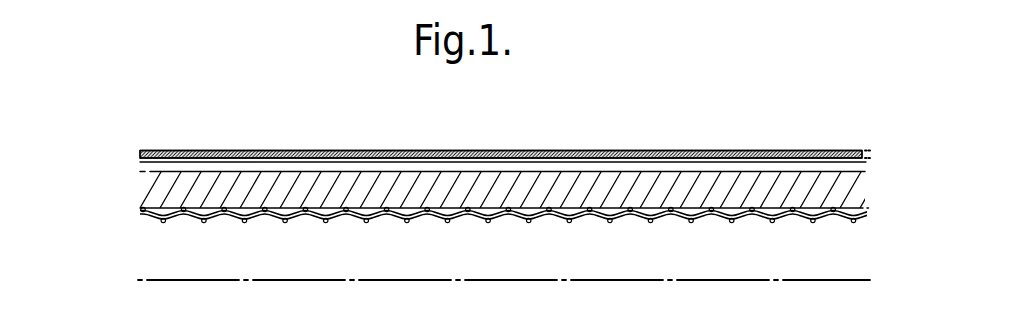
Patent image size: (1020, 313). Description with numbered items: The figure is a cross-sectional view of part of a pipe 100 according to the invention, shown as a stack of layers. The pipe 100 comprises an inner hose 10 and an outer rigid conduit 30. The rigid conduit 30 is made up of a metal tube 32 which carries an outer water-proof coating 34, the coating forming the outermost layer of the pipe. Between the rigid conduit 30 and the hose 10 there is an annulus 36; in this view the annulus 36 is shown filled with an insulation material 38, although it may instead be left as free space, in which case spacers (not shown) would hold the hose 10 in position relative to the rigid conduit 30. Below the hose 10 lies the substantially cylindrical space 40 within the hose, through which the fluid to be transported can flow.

The pipe 100 is at (441, 133).
The rigid conduit 30 is at (126, 159).
The outer water-proof coating 34 is at (562, 151).
The metal tube 32 is at (215, 166).
The annulus 36 is at (735, 184).
The insulation material 38 is at (817, 180).
The hose 10 is at (126, 216).
The substantially cylindrical space 40 is at (512, 261).